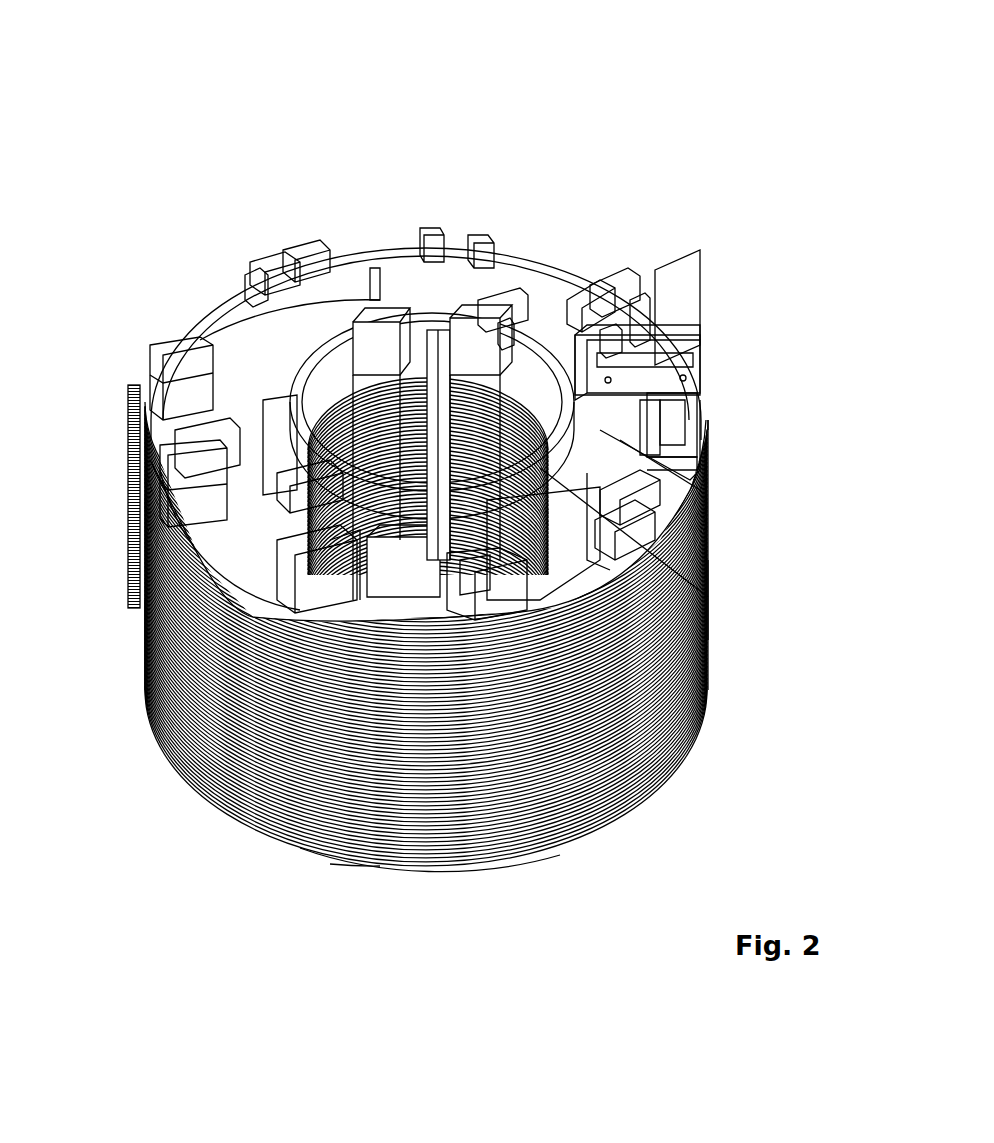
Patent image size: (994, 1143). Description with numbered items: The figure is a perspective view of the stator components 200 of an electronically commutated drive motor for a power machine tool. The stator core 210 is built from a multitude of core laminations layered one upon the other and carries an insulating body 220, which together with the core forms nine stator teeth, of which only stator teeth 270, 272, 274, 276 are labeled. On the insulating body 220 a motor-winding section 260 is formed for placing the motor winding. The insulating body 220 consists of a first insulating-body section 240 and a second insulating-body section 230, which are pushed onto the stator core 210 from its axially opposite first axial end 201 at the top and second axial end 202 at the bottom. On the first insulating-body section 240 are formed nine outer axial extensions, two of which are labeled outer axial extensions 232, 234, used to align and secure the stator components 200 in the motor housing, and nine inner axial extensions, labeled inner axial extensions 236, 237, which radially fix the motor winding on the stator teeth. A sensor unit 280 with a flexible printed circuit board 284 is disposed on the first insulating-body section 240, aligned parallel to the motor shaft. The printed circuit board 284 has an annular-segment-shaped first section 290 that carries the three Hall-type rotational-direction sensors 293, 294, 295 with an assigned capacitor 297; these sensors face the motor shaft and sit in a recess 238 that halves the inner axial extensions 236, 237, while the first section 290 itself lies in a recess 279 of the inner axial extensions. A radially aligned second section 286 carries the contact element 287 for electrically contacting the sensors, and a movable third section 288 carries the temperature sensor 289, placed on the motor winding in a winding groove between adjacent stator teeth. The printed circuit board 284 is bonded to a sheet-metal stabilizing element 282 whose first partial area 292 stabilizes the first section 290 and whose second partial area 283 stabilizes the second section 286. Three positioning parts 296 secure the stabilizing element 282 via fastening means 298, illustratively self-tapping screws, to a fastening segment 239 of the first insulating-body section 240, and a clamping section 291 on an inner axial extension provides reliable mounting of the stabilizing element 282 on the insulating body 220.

The stator components 200 is at (350, 85).
The first axial end 201 is at (700, 595).
The second axial end 202 is at (350, 866).
The stator core 210 is at (285, 832).
The insulating body 220 is at (178, 297).
The second insulating-body section 230 is at (392, 862).
The outer axial extension 232 is at (240, 472).
The outer axial extension 234 is at (240, 562).
The inner axial extension 236 is at (240, 513).
The inner axial extension 237 is at (140, 648).
The recess 238 is at (447, 437).
The fastening segment 239 is at (383, 268).
The first insulating-body section 240 is at (683, 475).
The motor-winding section 260 is at (210, 415).
The stator tooth 270 is at (233, 397).
The stator tooth 272 is at (263, 367).
The stator tooth 274 is at (350, 270).
The stator tooth 276 is at (585, 330).
The recess 279 is at (235, 428).
The sensor unit 280 is at (680, 322).
The stabilizing element 282 is at (670, 330).
The second partial area 283 is at (690, 345).
The printed circuit board 284 is at (640, 323).
The second section 286 is at (667, 330).
The contact element 287 is at (690, 376).
The third section 288 is at (680, 421).
The temperature sensor 289 is at (645, 484).
The first section 290 is at (465, 275).
The clamping section 291 is at (255, 270).
The first partial area 292 is at (495, 330).
The rotational-direction sensor 293 is at (270, 268).
The rotational-direction sensor 294 is at (405, 268).
The rotational-direction sensor 295 is at (547, 330).
The positioning part 296 is at (375, 268).
The capacitor 297 is at (640, 492).
The fastening means 298 is at (330, 268).